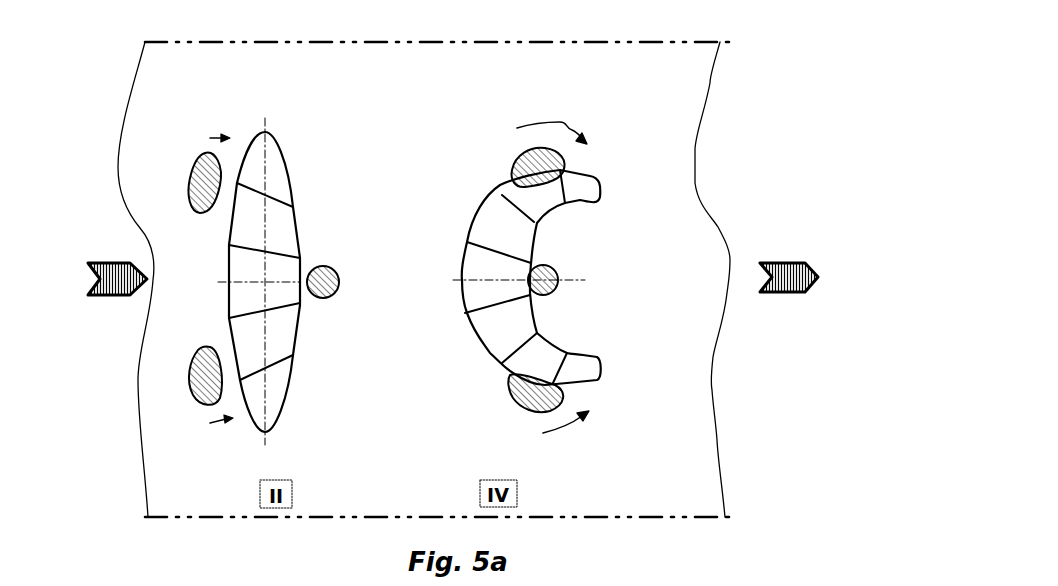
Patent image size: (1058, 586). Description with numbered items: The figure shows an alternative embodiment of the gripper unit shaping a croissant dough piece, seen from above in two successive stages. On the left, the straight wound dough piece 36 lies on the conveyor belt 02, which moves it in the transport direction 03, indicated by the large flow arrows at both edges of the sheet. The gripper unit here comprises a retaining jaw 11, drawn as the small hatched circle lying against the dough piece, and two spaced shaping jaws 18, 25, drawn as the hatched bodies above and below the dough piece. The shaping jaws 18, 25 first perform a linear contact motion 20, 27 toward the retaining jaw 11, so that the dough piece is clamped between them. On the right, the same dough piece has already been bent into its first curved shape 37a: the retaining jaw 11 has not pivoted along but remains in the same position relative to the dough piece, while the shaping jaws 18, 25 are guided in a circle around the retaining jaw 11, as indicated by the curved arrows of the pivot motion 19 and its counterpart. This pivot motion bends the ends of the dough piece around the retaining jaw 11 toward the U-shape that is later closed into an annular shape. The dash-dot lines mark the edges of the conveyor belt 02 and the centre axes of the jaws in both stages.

The shaping jaw 25 is at (165, 212).
The contact motion 27 is at (216, 136).
The wound dough piece 36 is at (275, 196).
The first curved shape of the dough piece 37a is at (493, 237).
The shaping jaw 18 is at (207, 392).
The contact motion 20 is at (212, 421).
The retaining jaw 11 is at (325, 296).
The pivot motion 19 is at (568, 430).
The conveyor belt 02 is at (714, 506).
The transport direction 03 is at (797, 293).